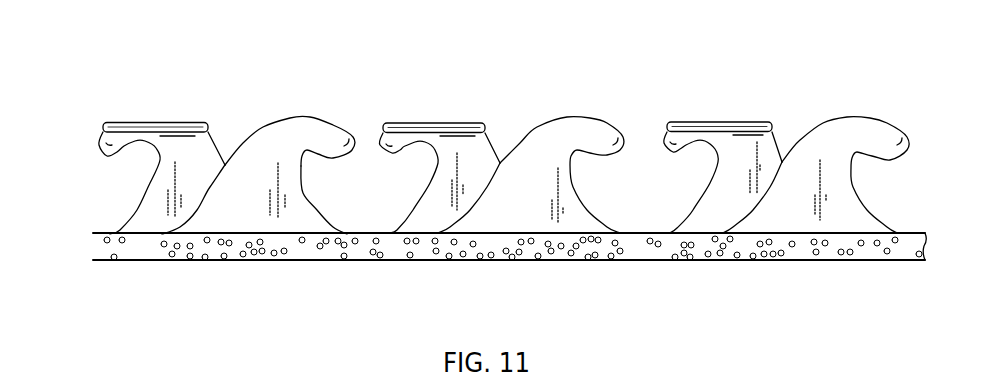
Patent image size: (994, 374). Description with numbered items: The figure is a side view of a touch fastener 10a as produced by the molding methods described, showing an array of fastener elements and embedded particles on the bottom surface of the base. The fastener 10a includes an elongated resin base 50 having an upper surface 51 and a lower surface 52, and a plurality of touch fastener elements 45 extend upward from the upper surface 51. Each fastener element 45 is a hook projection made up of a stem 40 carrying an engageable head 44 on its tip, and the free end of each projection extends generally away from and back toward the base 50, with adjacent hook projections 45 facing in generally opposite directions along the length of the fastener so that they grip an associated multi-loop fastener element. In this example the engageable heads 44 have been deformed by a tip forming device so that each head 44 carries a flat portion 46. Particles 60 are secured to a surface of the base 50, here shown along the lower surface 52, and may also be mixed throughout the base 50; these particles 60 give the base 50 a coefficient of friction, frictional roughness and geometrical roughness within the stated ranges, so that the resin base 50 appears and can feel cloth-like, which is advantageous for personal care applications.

The touch fastener 10a is at (138, 48).
The stem 40 is at (303, 198).
The engageable head 44 is at (307, 120).
The fastener element 45 is at (75, 123).
The flat portion 46 is at (423, 123).
The base 50 is at (92, 247).
The upper surface 51 is at (652, 226).
The lower surface 52 is at (655, 270).
The particles 60 is at (221, 262).